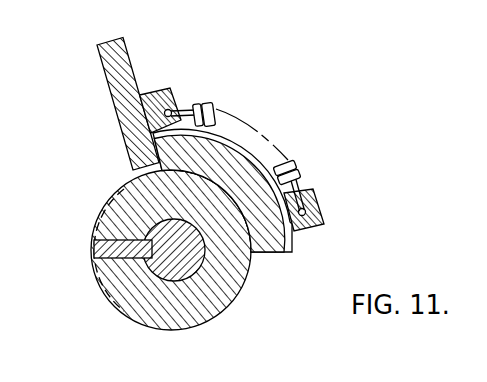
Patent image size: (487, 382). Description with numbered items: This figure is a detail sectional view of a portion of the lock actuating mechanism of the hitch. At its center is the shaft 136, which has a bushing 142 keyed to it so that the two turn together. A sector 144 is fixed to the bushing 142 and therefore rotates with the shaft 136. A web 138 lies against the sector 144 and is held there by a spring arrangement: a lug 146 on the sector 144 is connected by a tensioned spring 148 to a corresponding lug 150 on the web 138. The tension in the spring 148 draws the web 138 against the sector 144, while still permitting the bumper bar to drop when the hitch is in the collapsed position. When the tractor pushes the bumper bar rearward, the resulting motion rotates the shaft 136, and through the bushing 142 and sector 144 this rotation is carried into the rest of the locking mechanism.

The shaft 136 is at (173, 280).
The web 138 is at (100, 64).
The bushing 142 is at (235, 292).
The sector 144 is at (275, 255).
The lug 146 is at (323, 207).
The tensioned spring 148 is at (291, 162).
The lug 150 is at (168, 88).